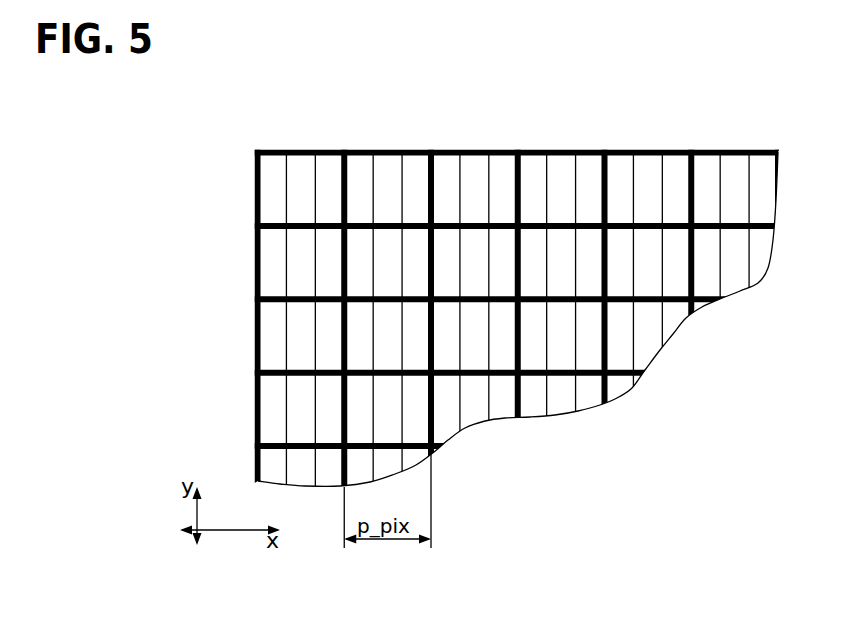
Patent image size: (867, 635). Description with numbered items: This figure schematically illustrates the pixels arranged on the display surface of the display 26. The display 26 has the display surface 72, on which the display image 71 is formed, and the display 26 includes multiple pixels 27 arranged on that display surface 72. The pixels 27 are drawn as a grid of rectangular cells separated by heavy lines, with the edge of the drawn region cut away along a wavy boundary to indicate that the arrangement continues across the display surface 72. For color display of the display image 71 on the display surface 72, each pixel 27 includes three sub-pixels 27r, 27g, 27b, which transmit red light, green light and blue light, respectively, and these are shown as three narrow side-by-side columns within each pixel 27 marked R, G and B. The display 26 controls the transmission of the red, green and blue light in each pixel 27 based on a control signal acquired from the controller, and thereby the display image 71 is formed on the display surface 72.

The display 26 is at (495, 291).
The pixel 27 is at (256, 210).
The sub-pixel 27r is at (704, 153).
The sub-pixel 27g is at (737, 153).
The sub-pixel 27b is at (772, 153).
The display surface 72 is at (518, 319).
The display image 71 is at (617, 383).